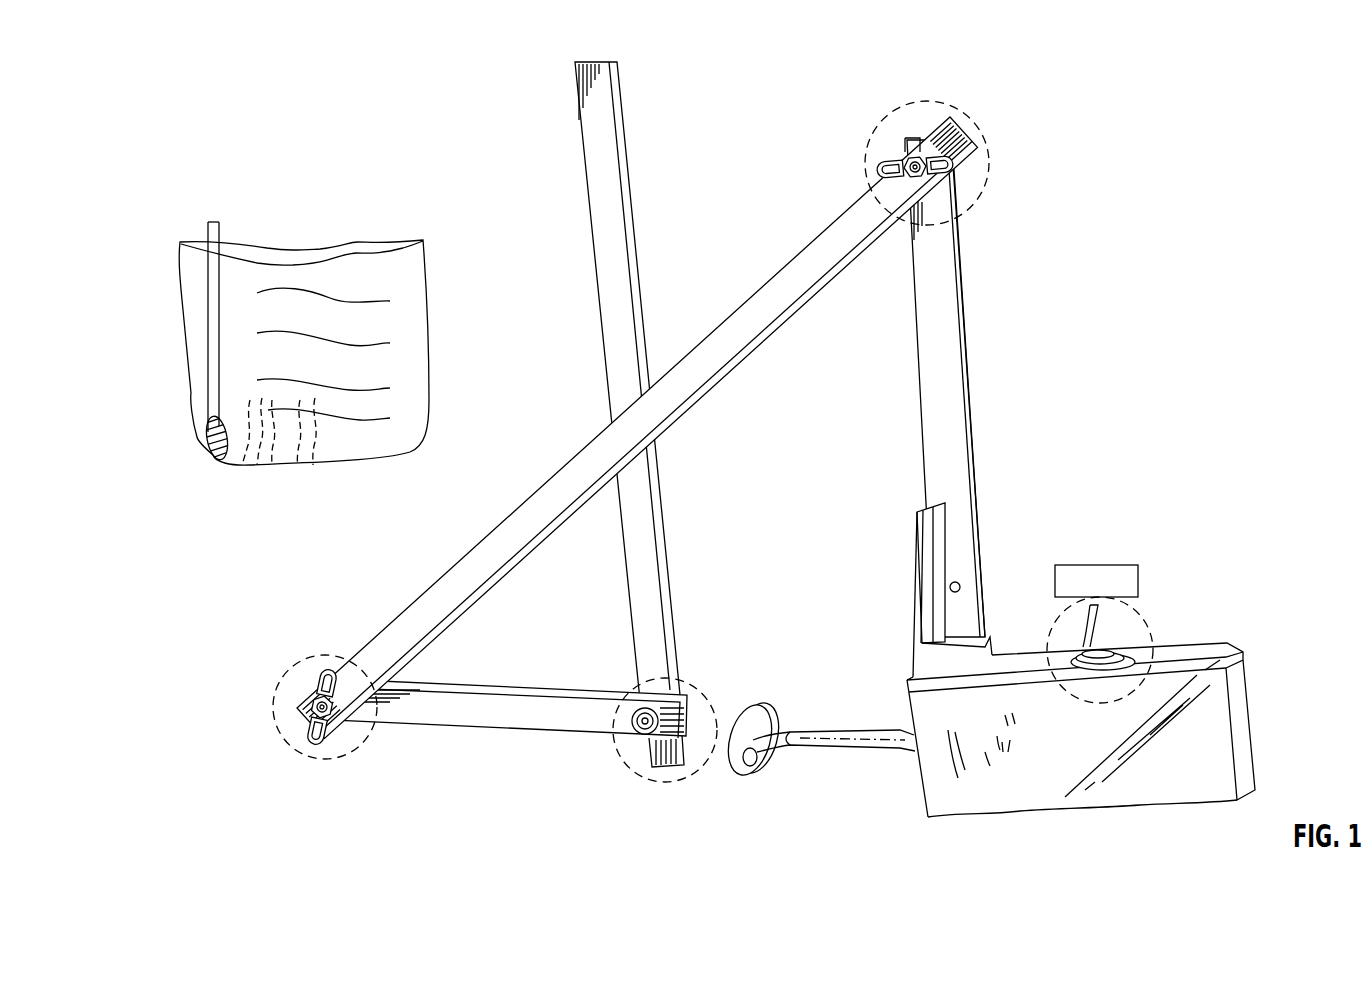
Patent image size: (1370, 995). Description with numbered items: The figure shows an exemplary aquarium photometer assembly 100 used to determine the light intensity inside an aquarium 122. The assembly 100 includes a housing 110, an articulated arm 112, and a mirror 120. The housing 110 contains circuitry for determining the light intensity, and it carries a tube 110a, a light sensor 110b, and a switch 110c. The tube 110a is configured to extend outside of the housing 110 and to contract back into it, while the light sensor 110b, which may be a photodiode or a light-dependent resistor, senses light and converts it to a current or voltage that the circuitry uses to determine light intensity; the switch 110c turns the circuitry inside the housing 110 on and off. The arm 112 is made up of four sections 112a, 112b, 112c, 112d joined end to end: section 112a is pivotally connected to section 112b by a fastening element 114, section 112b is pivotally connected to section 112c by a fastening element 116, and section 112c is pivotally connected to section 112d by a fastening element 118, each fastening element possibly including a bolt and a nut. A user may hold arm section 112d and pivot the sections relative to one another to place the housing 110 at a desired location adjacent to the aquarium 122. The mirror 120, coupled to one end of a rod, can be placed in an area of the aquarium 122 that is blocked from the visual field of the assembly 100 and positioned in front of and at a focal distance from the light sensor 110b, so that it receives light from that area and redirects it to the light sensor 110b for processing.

The aquarium photometer assembly 100 is at (1184, 87).
The housing 110 is at (1212, 745).
The tube 110a is at (845, 740).
The light sensor 110b is at (752, 768).
The switch 110c is at (1140, 615).
The arm 112 is at (962, 327).
The arm section 112a is at (945, 420).
The arm section 112b is at (800, 250).
The arm section 112c is at (505, 708).
The arm section 112d is at (648, 540).
The fastening element 114 is at (977, 128).
The fastening element 116 is at (293, 667).
The fastening element 118 is at (642, 780).
The mirror 120 is at (207, 452).
The aquarium 122 is at (430, 312).